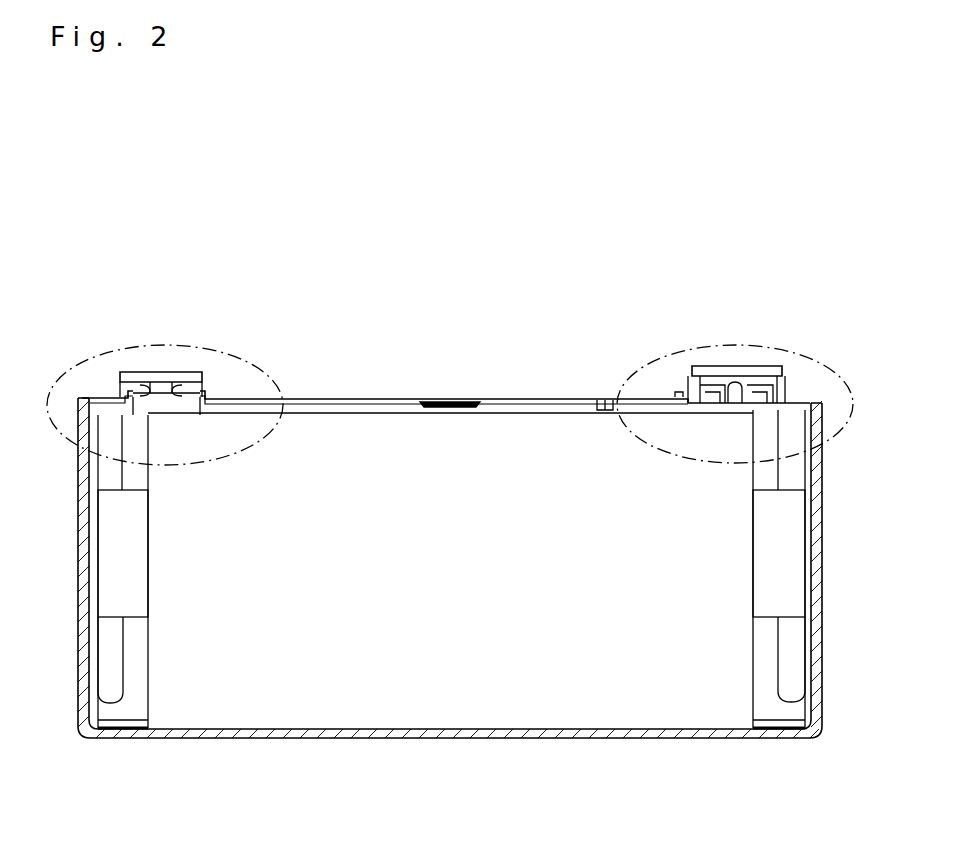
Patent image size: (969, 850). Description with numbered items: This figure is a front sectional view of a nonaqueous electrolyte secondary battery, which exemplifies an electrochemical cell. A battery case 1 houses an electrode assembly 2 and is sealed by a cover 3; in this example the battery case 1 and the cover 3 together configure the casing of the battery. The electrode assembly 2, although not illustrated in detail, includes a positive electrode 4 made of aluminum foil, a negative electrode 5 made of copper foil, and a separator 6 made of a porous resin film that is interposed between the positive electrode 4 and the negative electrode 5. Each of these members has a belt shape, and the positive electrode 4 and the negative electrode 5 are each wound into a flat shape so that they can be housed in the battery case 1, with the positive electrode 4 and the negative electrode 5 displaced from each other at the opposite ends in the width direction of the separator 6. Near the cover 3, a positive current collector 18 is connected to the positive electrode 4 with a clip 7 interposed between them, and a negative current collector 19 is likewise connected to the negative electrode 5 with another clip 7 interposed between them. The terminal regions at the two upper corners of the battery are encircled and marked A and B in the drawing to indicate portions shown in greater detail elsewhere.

The battery case 1 is at (605, 733).
The electrode assembly 2 is at (376, 705).
The cover 3 is at (372, 399).
The positive electrode 4 is at (128, 713).
The negative electrode 5 is at (777, 713).
The separator 6 is at (296, 700).
The clip 7 is at (105, 550).
The positive current collector 18 is at (105, 655).
The negative current collector 19 is at (795, 655).
The detail region A is at (215, 345).
The detail region B is at (782, 345).